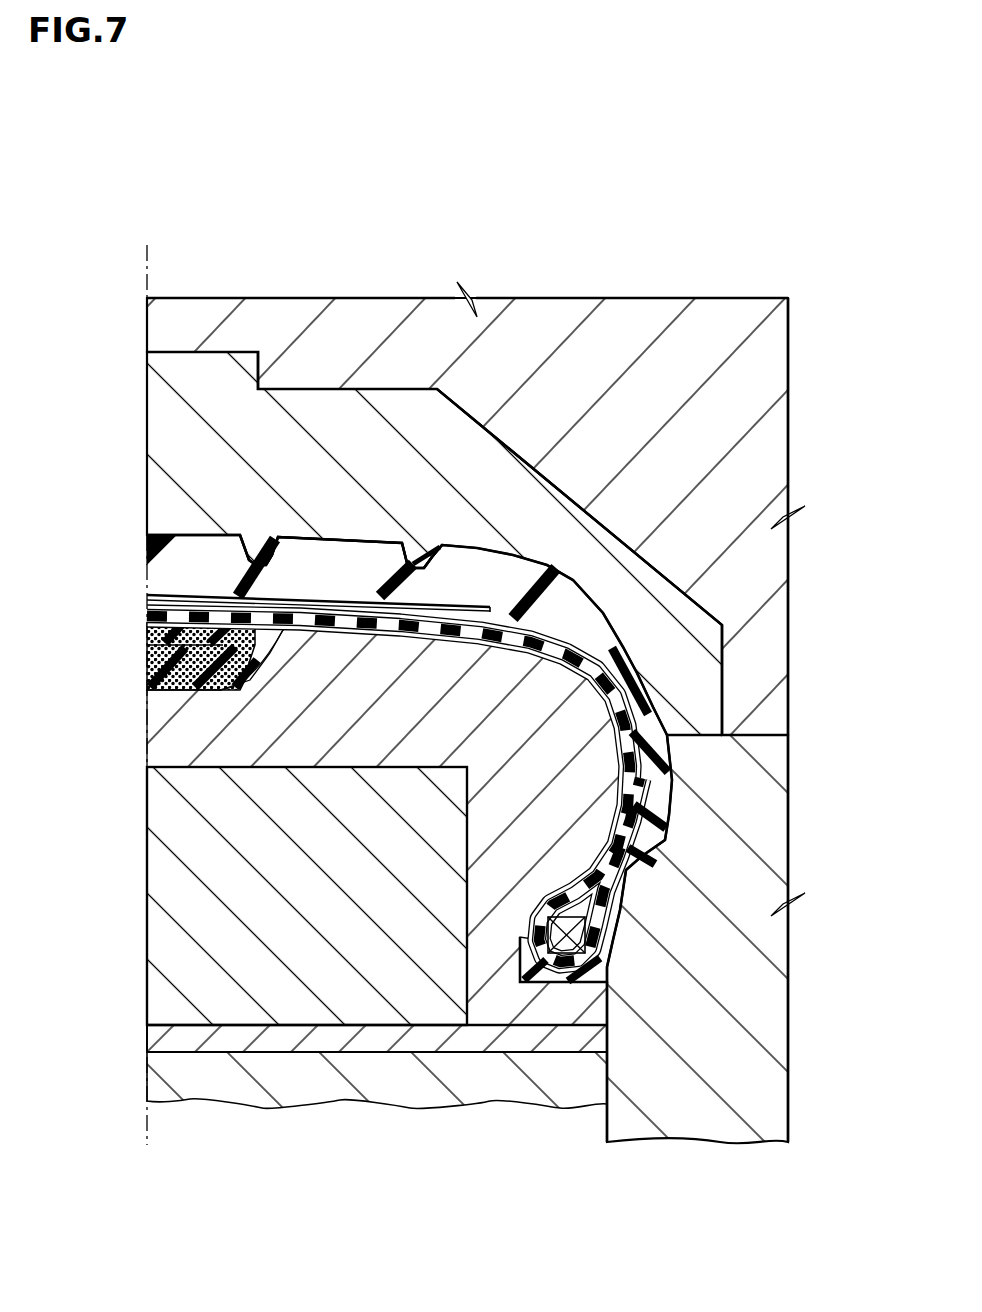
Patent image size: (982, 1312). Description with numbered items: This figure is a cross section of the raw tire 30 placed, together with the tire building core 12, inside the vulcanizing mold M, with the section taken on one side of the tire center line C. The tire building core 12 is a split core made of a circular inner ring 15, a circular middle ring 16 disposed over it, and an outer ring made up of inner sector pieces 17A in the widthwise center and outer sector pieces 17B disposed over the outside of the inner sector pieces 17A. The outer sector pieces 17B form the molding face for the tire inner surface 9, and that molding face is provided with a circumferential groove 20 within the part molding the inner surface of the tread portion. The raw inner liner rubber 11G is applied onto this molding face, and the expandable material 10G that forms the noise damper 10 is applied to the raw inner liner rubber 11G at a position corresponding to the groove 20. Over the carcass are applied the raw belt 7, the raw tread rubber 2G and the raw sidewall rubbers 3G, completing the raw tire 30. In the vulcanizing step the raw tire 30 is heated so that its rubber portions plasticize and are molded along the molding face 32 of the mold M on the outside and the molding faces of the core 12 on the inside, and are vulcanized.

The vulcanizing mold M is at (630, 260).
The tire equator (center line) C is at (144, 684).
The raw tread rubber 2G is at (483, 578).
The raw sidewall rubber 3G is at (648, 736).
The raw inner liner rubber 11G is at (562, 672).
The expandable material 10G is at (143, 664).
The raw belt 7 is at (140, 601).
The tire inner surface 9 is at (350, 634).
The noise damper 10 is at (147, 692).
The tire building core 12 is at (178, 887).
The inner ring 15 is at (145, 1082).
The middle ring 16 is at (145, 1035).
The inner sector pieces 17A is at (173, 946).
The outer sector pieces 17B is at (173, 737).
The circumferential groove 20 is at (218, 690).
The raw tire 30 is at (180, 572).
The molding face 32 is at (212, 535).